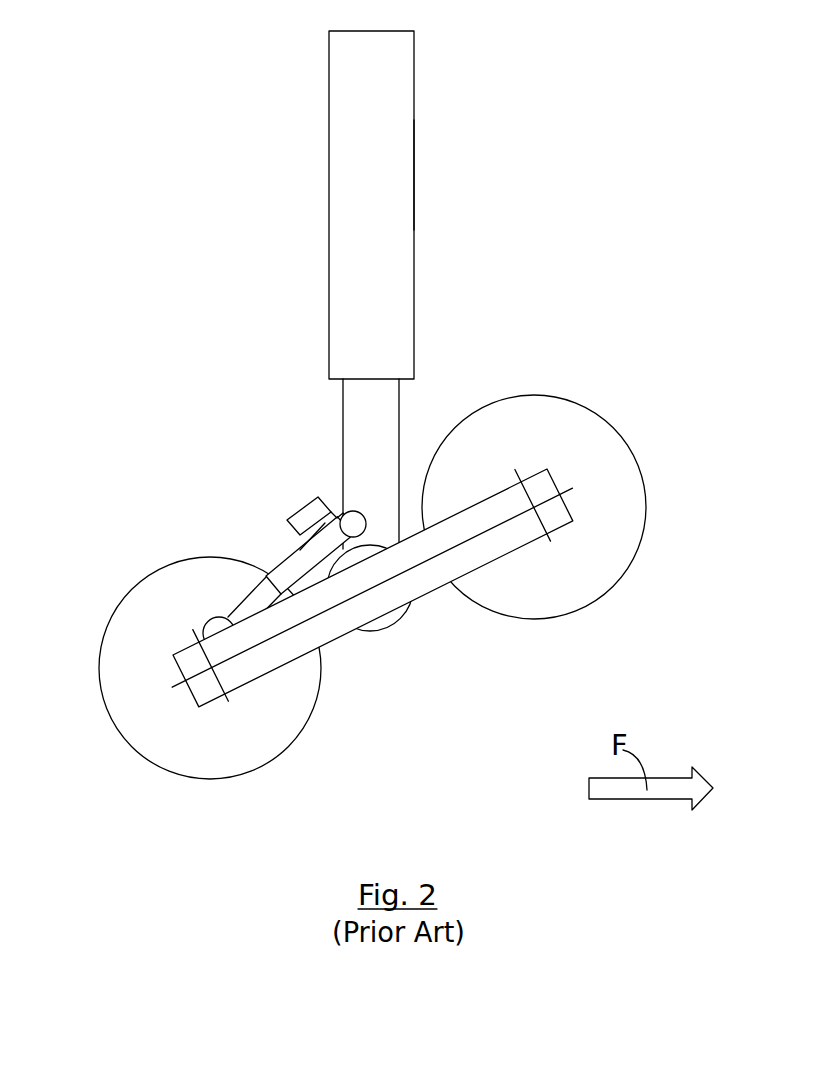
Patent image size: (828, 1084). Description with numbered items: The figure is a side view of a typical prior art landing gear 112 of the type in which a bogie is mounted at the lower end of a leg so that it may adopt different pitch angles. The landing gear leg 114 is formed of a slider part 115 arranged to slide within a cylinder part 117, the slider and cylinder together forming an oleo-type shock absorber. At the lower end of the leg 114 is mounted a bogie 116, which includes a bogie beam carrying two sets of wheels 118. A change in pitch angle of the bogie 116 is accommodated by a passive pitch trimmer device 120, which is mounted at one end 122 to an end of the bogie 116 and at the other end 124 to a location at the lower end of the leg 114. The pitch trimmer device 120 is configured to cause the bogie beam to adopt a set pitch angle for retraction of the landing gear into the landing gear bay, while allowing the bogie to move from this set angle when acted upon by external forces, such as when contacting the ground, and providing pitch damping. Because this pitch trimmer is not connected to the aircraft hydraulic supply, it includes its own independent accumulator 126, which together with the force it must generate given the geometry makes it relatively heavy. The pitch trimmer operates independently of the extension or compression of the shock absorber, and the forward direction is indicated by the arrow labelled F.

The landing gear 112 is at (147, 329).
The landing gear leg 114 is at (399, 270).
The slider part 115 is at (387, 415).
The bogie 116 is at (335, 627).
The cylinder part 117 is at (399, 172).
The wheels 118 is at (618, 545).
The pitch trimmer device 120 is at (300, 552).
The one end 122 is at (217, 630).
The other end 124 is at (352, 517).
The accumulator 126 is at (307, 510).